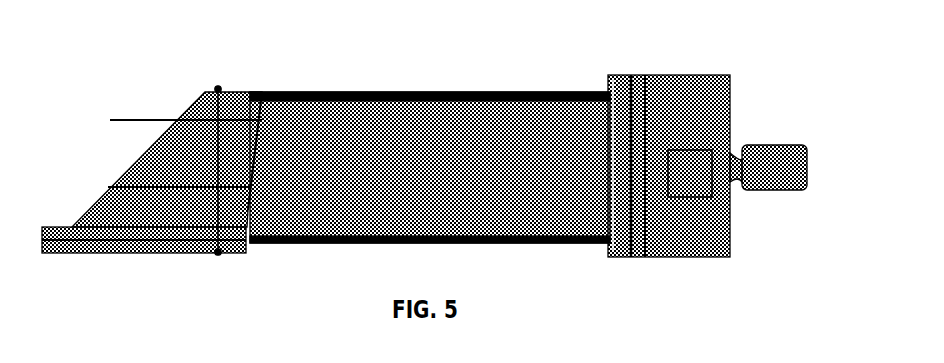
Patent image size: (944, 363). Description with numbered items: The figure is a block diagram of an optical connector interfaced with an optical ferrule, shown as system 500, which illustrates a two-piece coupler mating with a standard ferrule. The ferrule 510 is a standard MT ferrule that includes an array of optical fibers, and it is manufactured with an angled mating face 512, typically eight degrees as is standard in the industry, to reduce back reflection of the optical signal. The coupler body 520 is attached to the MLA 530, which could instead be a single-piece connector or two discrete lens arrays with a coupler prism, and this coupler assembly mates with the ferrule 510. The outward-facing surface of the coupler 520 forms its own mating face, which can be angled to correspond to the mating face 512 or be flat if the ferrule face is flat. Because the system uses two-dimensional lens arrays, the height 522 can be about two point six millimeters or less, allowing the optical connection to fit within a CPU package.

The system 500 is at (147, 68).
The ferrule 510 is at (558, 197).
The mating face 512 is at (250, 195).
The coupler body 520 is at (187, 130).
The height 522 is at (217, 237).
The MLA 530 is at (127, 237).